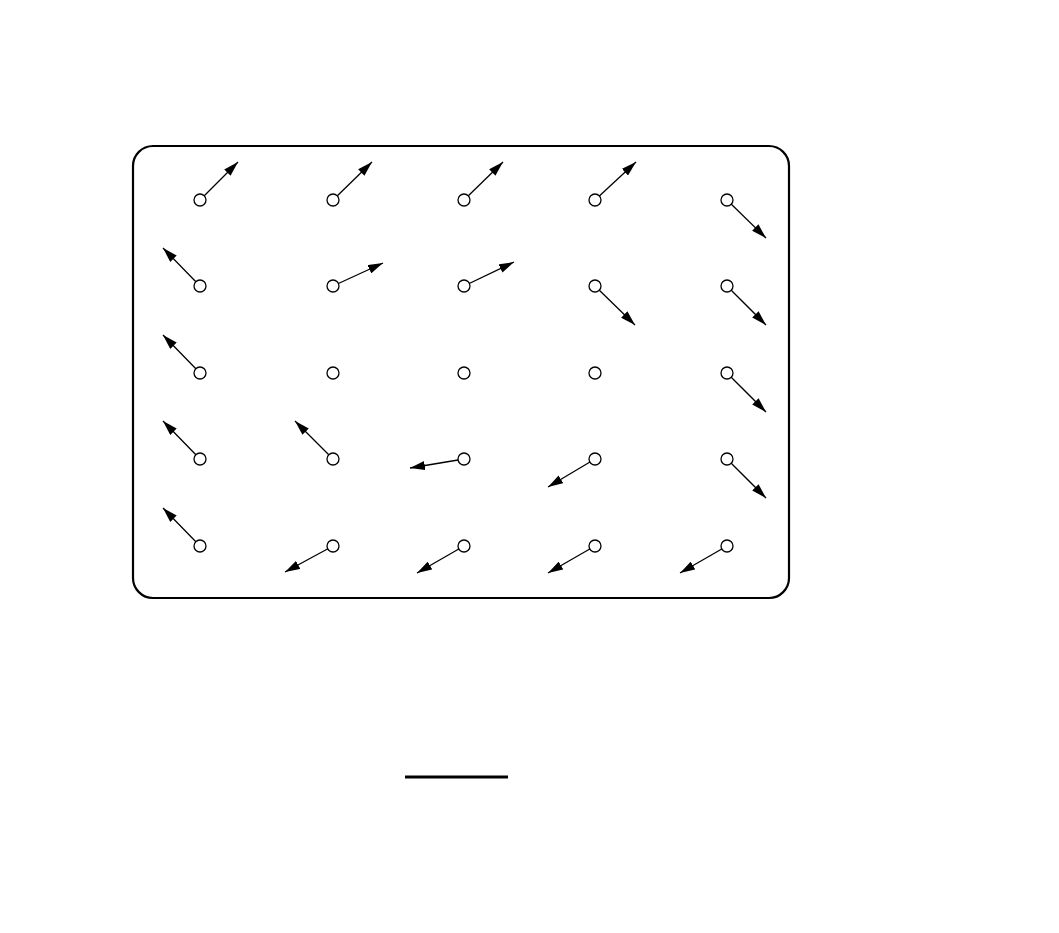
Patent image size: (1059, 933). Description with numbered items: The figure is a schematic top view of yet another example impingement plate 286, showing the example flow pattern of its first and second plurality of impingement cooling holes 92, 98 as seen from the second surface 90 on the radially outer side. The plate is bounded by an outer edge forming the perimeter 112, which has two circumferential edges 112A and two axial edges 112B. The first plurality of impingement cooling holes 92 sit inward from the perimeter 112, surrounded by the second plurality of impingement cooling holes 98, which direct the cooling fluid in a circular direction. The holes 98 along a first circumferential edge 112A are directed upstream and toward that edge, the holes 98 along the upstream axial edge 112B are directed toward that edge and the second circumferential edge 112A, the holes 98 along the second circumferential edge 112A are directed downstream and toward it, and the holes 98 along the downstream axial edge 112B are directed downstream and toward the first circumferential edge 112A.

The impingement plate 286 is at (826, 111).
The second surface 90 is at (776, 217).
The perimeter 112 is at (789, 342).
The circumferential edge 112A is at (133, 500).
The axial edge 112B is at (457, 146).
The second plurality of impingement cooling holes 98 is at (204, 206).
The first plurality of impingement cooling holes 92 is at (337, 379).